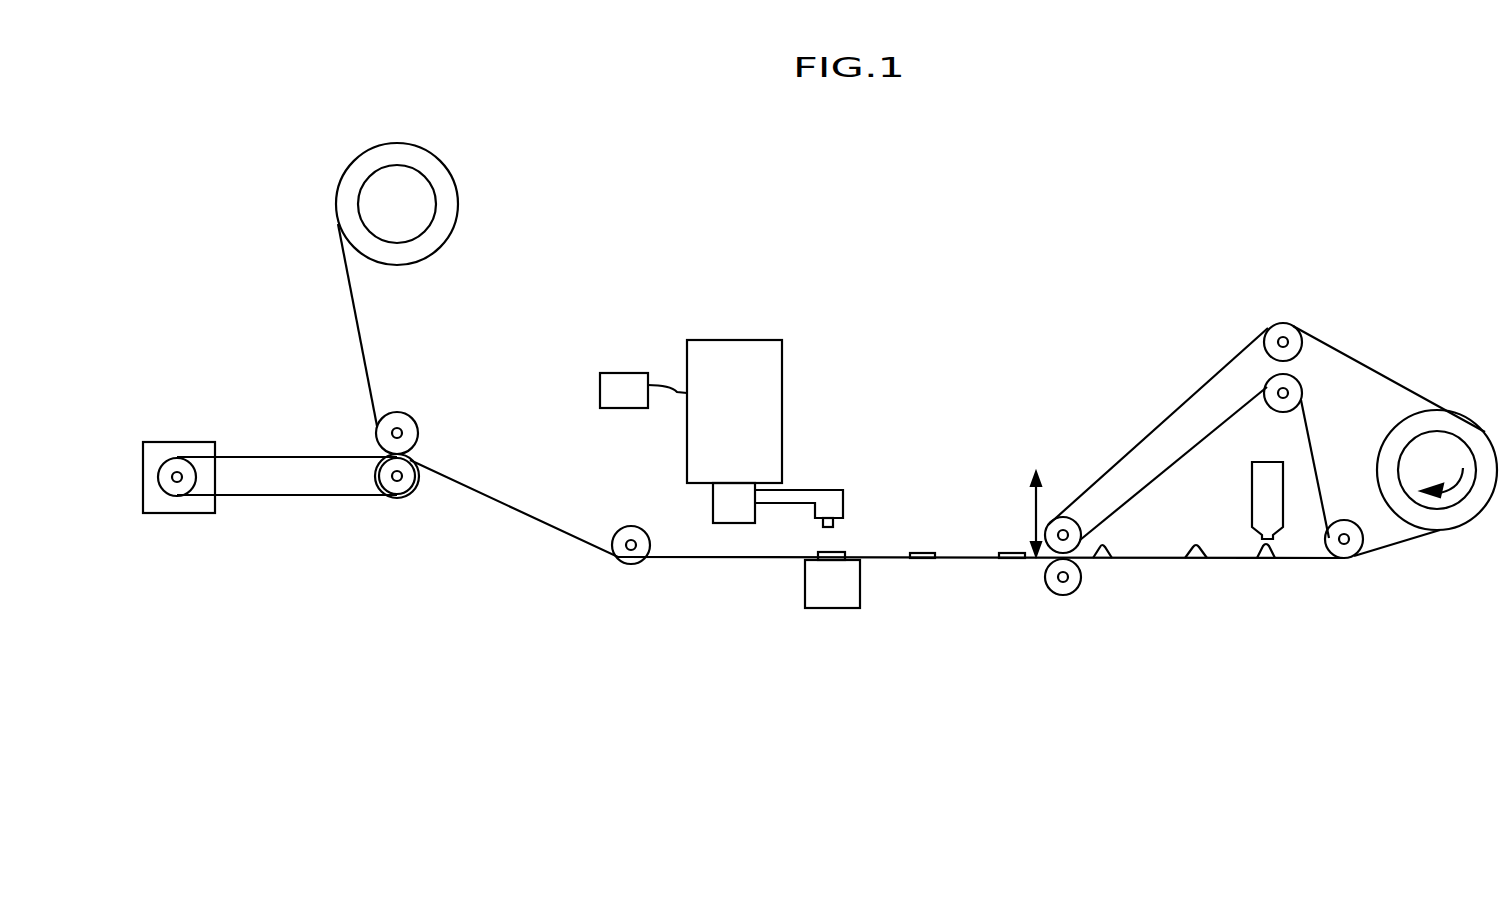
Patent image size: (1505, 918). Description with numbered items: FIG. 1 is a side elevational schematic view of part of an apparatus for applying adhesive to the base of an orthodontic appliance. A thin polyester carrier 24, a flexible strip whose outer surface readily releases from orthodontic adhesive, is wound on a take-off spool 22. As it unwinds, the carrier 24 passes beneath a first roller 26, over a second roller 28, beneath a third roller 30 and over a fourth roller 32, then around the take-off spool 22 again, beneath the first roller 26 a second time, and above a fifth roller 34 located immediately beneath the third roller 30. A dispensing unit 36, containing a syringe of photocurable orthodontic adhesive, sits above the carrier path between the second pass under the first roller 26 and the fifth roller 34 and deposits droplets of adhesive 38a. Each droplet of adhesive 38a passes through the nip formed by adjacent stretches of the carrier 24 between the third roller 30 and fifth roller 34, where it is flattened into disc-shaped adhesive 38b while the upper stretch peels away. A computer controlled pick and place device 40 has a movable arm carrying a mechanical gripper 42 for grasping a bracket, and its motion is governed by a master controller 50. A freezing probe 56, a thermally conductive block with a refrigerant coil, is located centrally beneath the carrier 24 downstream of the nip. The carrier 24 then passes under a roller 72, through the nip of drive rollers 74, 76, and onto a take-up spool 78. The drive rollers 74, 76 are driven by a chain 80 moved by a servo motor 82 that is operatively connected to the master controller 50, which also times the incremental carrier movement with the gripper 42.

The take-off spool 22 is at (1382, 445).
The carrier 24 is at (742, 565).
The first roller 26 is at (1350, 522).
The second roller 28 is at (1281, 411).
The third roller 30 is at (1078, 517).
The fourth roller 32 is at (1302, 347).
The fifth roller 34 is at (1049, 591).
The dispensing unit 36 is at (1252, 470).
The droplet of adhesive 38a is at (1197, 550).
The flattened adhesive 38b is at (1012, 552).
The pick and place device 40 is at (782, 358).
The mechanical gripper 42 is at (835, 524).
The master controller 50 is at (630, 372).
The freezing probe 56 is at (860, 597).
The roller 72 is at (616, 535).
The drive roller 74 is at (418, 484).
The drive roller 76 is at (418, 430).
The take-up spool 78 is at (445, 182).
The chain 80 is at (285, 457).
The servo motor 82 is at (175, 442).